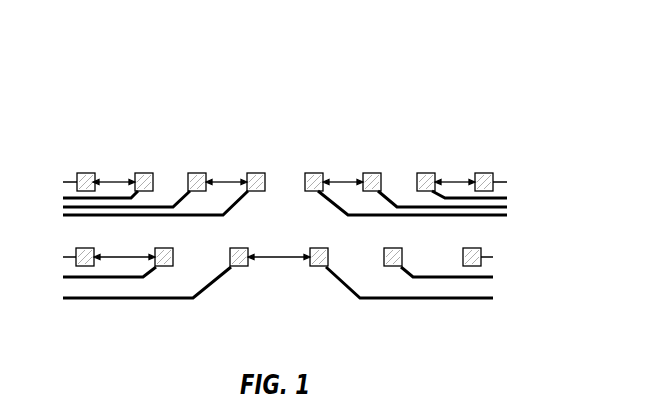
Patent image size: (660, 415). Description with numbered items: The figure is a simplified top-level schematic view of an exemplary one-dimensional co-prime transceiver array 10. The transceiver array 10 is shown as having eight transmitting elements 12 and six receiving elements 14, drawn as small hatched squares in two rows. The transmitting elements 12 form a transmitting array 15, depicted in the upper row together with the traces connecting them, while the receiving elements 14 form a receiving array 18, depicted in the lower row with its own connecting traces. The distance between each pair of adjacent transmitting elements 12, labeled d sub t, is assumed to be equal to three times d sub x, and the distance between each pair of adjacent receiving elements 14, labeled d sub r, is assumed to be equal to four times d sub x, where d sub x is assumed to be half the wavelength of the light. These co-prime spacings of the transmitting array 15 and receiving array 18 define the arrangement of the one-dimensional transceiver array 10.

The one-dimensional co-prime transceiver array 10 is at (489, 61).
The transmitting elements 12 is at (257, 173).
The receiving elements 14 is at (85, 267).
The transmitting array 15 is at (531, 194).
The receiving array 18 is at (517, 269).